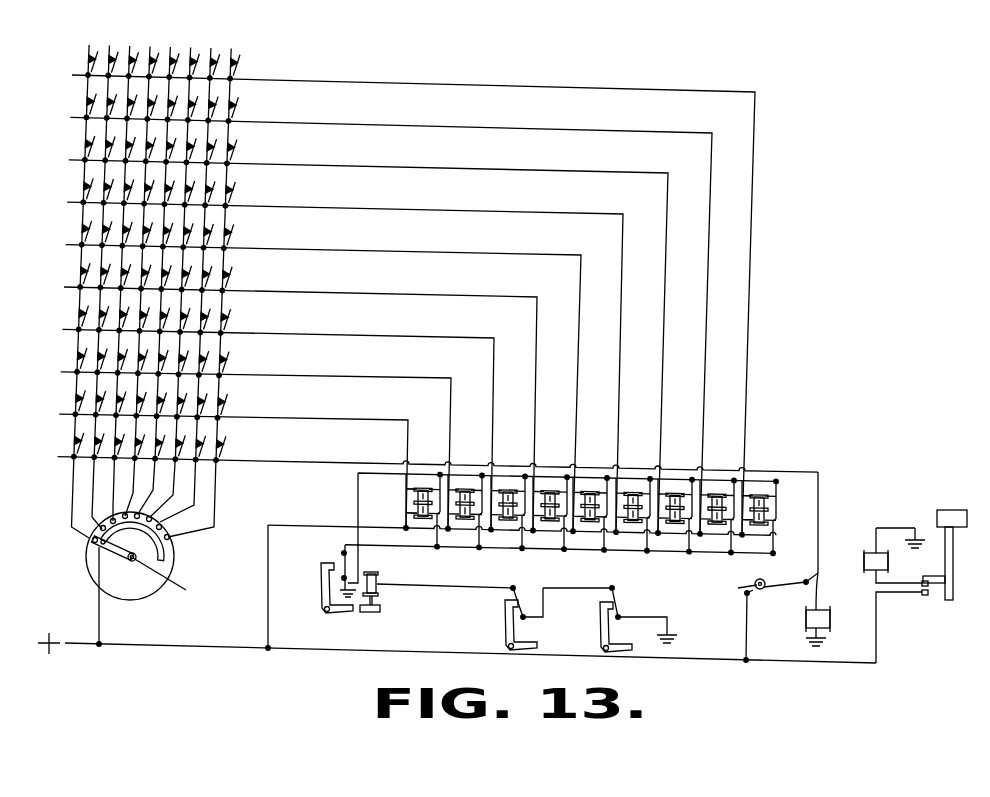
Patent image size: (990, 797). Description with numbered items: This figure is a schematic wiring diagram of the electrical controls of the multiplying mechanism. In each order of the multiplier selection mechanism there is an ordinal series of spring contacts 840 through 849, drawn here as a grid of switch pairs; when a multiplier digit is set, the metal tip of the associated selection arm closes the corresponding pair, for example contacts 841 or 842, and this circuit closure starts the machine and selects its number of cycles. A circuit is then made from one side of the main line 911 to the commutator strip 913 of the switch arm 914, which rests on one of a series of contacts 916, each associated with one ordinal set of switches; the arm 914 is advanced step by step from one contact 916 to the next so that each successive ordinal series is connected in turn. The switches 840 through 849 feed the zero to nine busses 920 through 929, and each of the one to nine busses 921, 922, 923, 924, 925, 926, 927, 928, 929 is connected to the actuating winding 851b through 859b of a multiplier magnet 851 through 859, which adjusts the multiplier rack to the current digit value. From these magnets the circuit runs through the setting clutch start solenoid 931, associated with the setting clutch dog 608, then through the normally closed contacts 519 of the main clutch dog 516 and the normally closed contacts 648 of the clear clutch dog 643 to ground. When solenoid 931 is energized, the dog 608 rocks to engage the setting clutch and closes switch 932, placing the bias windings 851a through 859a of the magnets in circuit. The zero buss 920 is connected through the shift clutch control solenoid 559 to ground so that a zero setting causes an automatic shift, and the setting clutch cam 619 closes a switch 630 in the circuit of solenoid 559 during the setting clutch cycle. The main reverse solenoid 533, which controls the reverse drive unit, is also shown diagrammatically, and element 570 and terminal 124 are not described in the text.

The spring contacts 849 is at (94, 57).
The multiplier buss 929 is at (353, 83).
The multiplier buss 928 is at (353, 125).
The multiplier buss 927 is at (352, 167).
The multiplier buss 926 is at (351, 209).
The multiplier buss 925 is at (350, 251).
The multiplier buss 924 is at (349, 293).
The multiplier buss 923 is at (348, 335).
The multiplier buss 922 is at (347, 378).
The multiplier buss 921 is at (346, 421).
The "0" buss 920 is at (341, 463).
The spring contacts 842 is at (223, 356).
The spring contacts 841 is at (221, 396).
The spring contacts 840 is at (222, 439).
The contacts 916 is at (88, 541).
The commutator strip 913 is at (163, 559).
The switch arm 914 is at (105, 551).
The shaft contact 570 is at (156, 566).
The main line 911 is at (72, 642).
The actuating winding 851b is at (424, 488).
The multiplier magnet 851 is at (412, 504).
The bias winding 851a is at (422, 518).
The switch 932 is at (342, 552).
The setting clutch dog 608 is at (322, 570).
The setting clutch solenoid 931 is at (378, 587).
The normally closed contacts 519 is at (512, 587).
The main clutch dog 516 is at (506, 605).
The normally closed contacts 648 is at (611, 587).
The clear clutch dog 643 is at (603, 605).
The setting clutch cam 619 is at (752, 582).
The switch 630 is at (748, 594).
The actuating winding 859b is at (759, 488).
The multiplier magnet 859 is at (768, 515).
The bias winding 859a is at (757, 518).
The main reverse solenoid 533 is at (863, 559).
The shift clutch solenoid 559 is at (840, 598).
The negative battery terminal 124 is at (950, 510).